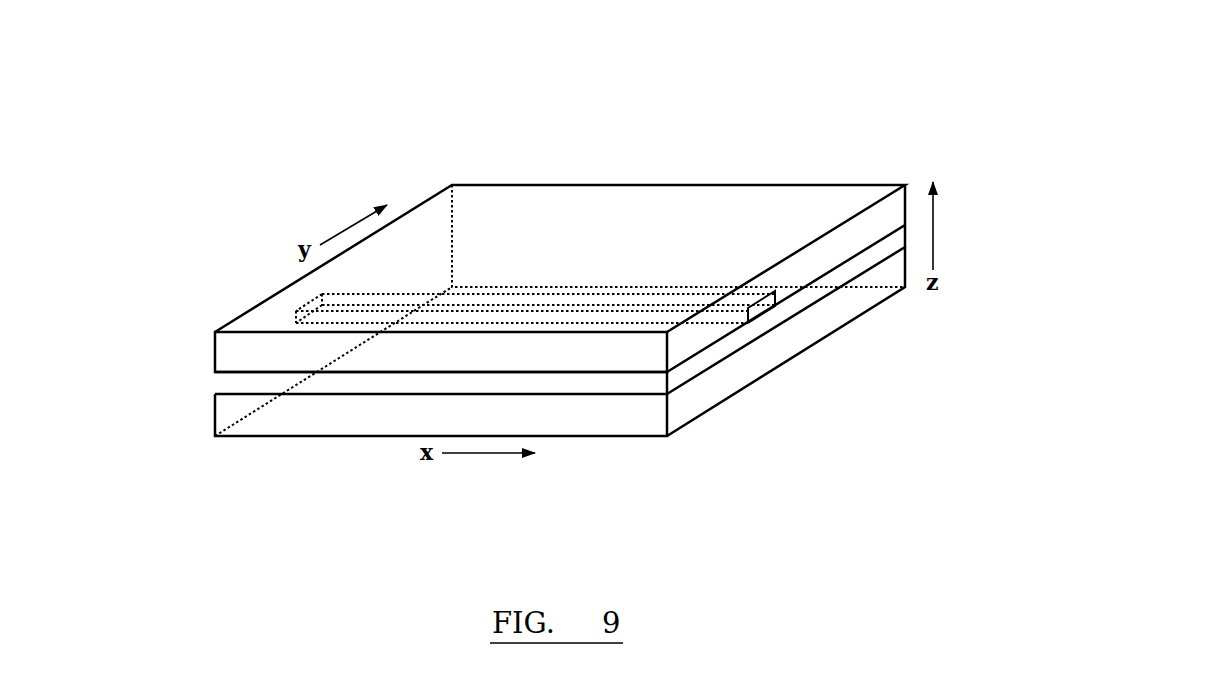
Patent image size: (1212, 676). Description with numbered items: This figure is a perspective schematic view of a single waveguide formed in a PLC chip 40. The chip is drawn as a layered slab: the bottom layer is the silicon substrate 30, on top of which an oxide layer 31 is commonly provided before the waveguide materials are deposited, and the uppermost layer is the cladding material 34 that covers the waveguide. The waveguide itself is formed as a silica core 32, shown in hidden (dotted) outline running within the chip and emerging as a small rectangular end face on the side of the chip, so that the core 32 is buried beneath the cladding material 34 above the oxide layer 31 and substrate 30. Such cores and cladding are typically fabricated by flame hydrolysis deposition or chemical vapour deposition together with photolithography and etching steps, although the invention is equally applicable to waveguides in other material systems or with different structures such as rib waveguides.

The PLC chip 40 is at (576, 259).
The cladding material 34 is at (215, 353).
The oxide layer 31 is at (215, 382).
The silicon substrate 30 is at (215, 417).
The silica core 32 is at (762, 314).